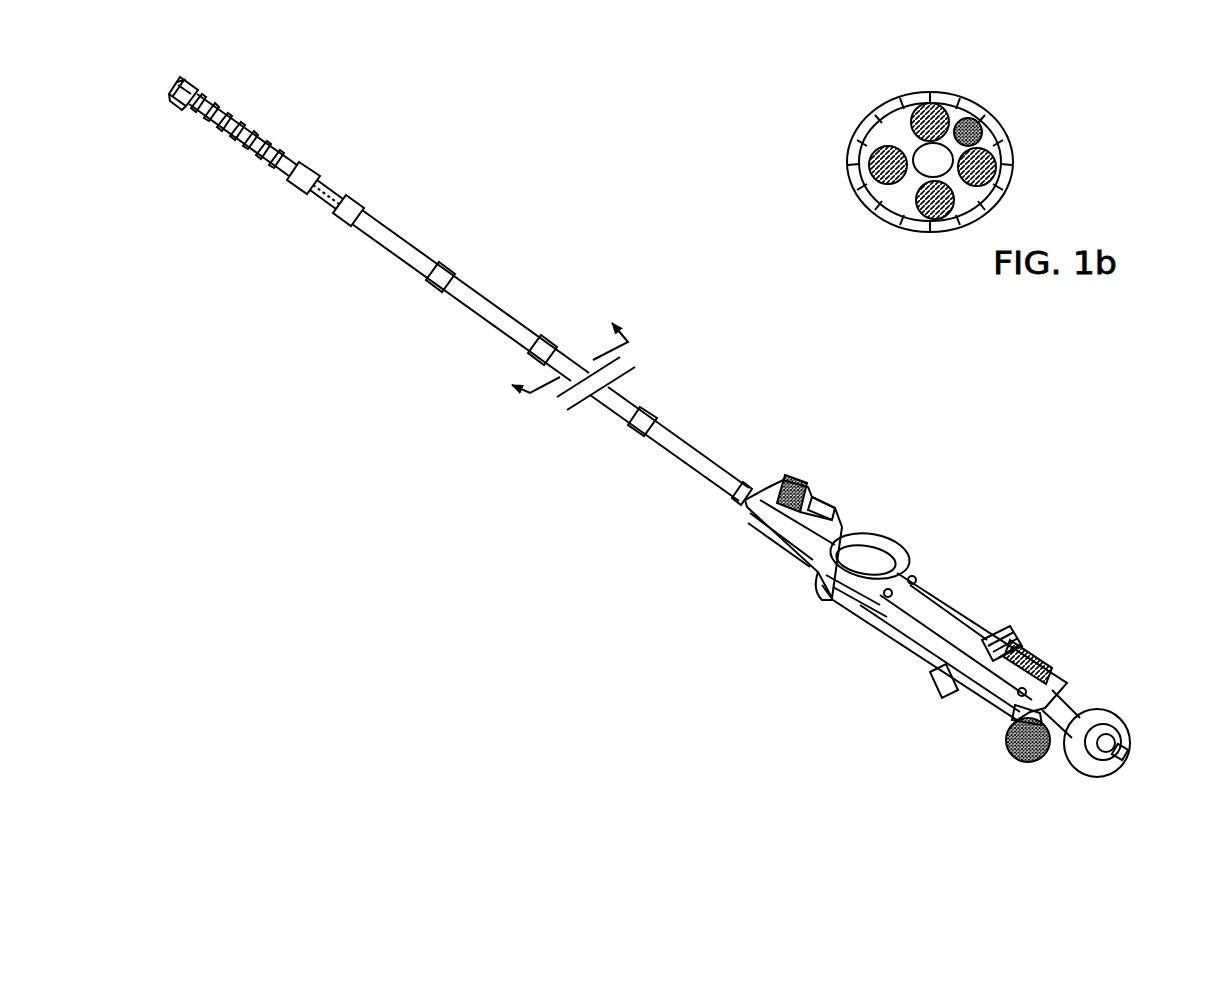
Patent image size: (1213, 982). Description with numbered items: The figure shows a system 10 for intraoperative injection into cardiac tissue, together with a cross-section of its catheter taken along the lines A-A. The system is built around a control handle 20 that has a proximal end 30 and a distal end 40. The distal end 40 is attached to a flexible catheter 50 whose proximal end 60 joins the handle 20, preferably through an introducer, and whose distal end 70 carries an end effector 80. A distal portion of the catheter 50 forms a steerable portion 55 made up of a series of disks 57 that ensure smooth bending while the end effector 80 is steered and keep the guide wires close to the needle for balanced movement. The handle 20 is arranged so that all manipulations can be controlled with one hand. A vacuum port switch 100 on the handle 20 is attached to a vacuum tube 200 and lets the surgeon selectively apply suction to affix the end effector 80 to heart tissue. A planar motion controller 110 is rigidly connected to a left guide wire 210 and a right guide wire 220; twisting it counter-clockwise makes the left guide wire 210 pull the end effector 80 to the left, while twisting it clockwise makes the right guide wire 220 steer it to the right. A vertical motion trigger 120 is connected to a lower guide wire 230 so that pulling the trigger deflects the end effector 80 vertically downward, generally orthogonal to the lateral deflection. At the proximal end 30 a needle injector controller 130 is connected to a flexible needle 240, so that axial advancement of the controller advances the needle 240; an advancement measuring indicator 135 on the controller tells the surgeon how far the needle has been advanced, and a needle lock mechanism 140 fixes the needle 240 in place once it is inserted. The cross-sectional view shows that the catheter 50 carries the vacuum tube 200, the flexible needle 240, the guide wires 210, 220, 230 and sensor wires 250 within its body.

In FIG. 1A, the system 10 is at (838, 387).
In FIG. 1A, the control handle 20 is at (933, 605).
In FIG. 1A, the proximal end of the handle 30 is at (988, 710).
In FIG. 1A, the distal end of the handle 40 is at (735, 532).
In FIG. 1A, the flexible catheter 50 is at (513, 330).
In FIG. 1B, the flexible catheter 50 is at (880, 87).
In FIG. 1A, the steerable portion 55 is at (272, 103).
In FIG. 1A, the disks 57 is at (290, 160).
In FIG. 1A, the proximal end of the catheter 60 is at (728, 510).
In FIG. 1A, the distal end of the catheter 70 is at (180, 117).
In FIG. 1A, the end effector 80 is at (190, 83).
In FIG. 1A, the vacuum port switch 100 is at (797, 483).
In FIG. 1A, the planar motion controller 110 is at (902, 540).
In FIG. 1A, the vertical motion trigger 120 is at (930, 690).
In FIG. 1A, the needle injector controller 130 is at (1097, 713).
In FIG. 1A, the advancement measuring indicator 135 is at (1037, 660).
In FIG. 1A, the needle lock mechanism 140 is at (1017, 767).
In FIG. 1B, the vacuum tube 200 is at (930, 157).
In FIG. 1B, the left guide wire 210 is at (863, 167).
In FIG. 1B, the right guide wire 220 is at (1000, 160).
In FIG. 1B, the lower guide wire 230 is at (917, 217).
In FIG. 1B, the flexible needle 240 is at (933, 110).
In FIG. 1B, the sensor wires 250 is at (977, 127).